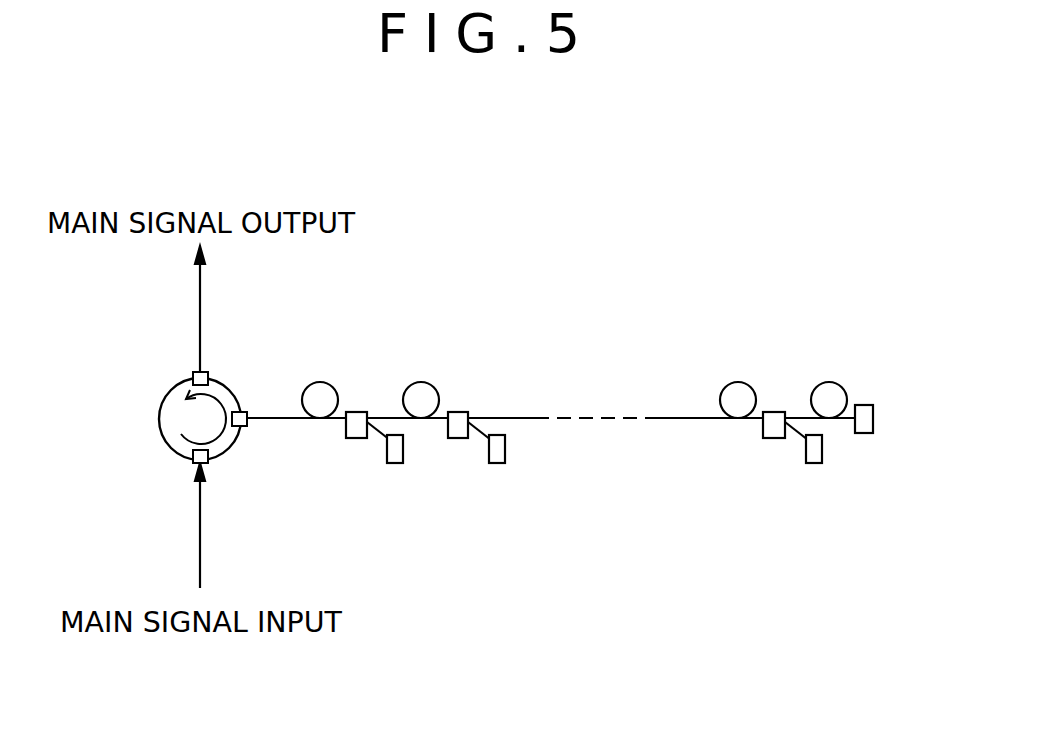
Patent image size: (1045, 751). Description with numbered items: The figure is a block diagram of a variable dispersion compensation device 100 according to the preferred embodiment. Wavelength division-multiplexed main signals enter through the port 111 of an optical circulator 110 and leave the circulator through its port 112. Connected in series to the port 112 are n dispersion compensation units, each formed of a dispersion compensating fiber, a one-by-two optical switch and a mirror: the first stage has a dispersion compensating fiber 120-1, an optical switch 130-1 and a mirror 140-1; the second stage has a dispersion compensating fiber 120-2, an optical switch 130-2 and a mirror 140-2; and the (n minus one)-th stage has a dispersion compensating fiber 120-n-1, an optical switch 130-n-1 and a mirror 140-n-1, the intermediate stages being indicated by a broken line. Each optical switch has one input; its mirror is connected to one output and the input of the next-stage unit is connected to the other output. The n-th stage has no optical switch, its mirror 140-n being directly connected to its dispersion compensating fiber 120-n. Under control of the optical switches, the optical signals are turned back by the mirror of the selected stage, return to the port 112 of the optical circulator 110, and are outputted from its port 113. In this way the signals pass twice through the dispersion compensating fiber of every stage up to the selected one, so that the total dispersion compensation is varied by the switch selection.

The variable dispersion compensation device 100 is at (605, 261).
The optical circulator 110 is at (159, 420).
The port 111 is at (192, 463).
The port 112 is at (246, 426).
The port 113 is at (192, 374).
The dispersion compensating fiber 120-1 is at (322, 382).
The dispersion compensating fiber 120-2 is at (420, 382).
The dispersion compensating fiber 120-n-1 is at (740, 382).
The dispersion compensating fiber 120-n is at (832, 382).
The 1×2 optical switch 130-1 is at (357, 438).
The 1×2 optical switch 130-2 is at (458, 438).
The 1×2 optical switch 130-n-1 is at (773, 438).
The mirror 140-1 is at (395, 463).
The mirror 140-2 is at (497, 463).
The mirror 140-n-1 is at (814, 463).
The mirror 140-n is at (864, 433).